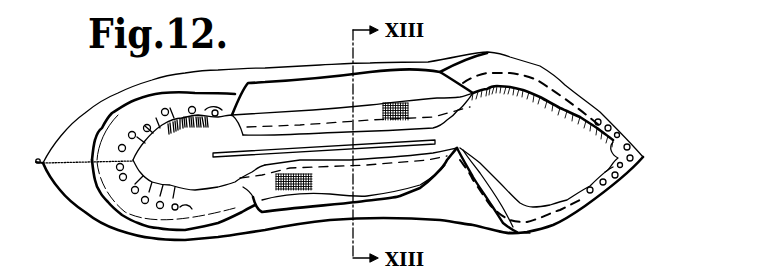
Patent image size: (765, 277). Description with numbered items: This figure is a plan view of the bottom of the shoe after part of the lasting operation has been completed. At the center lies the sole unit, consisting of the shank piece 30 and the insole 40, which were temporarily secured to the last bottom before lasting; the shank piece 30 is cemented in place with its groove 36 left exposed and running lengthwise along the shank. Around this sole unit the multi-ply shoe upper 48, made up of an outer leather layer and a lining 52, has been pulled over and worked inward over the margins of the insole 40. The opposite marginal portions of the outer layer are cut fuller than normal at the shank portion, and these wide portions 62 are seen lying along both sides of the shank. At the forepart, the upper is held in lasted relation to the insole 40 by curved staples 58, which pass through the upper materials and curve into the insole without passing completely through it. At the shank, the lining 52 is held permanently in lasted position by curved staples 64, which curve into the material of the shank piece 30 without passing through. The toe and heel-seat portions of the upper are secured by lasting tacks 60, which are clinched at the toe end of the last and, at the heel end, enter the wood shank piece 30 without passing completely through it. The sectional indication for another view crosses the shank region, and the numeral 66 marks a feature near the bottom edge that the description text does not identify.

The shank piece 30 is at (199, 153).
The groove 36 is at (220, 158).
The insole 40 is at (535, 185).
The multi-ply shoe upper 48 is at (75, 193).
The lining 52 is at (312, 117).
The curved staples 58 is at (543, 83).
The tacks 60 is at (145, 204).
The wide portions 62 is at (282, 93).
The curved staples 64 is at (418, 110).
The bottom edge 66 is at (515, 254).